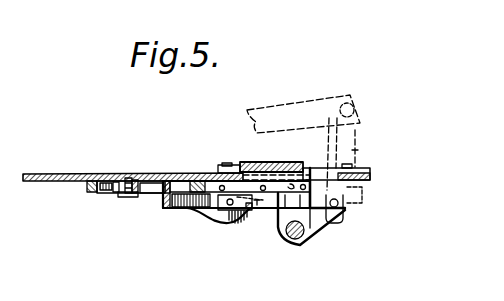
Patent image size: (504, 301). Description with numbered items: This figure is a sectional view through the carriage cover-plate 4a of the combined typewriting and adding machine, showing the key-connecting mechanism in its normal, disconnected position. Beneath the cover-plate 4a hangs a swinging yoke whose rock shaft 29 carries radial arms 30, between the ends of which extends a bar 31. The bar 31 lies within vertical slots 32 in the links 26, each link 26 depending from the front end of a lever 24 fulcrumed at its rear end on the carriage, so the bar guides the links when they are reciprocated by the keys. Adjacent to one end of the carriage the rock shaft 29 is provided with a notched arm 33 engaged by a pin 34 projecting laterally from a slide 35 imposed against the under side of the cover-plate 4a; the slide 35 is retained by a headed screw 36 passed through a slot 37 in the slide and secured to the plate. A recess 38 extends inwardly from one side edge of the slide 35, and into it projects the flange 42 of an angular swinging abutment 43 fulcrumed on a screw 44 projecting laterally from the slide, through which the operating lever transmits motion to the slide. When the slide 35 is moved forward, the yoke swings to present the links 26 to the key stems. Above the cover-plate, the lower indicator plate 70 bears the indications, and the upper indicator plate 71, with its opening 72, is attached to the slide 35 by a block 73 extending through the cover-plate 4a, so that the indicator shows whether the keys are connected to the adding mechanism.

The cover-plate 4a is at (72, 174).
The lever 24 is at (292, 107).
The link 26 is at (353, 144).
The rock shaft 29 is at (293, 239).
The radial arms 30 is at (321, 212).
The bar 31 is at (343, 212).
The vertical slots 32 is at (332, 225).
The notched arm 33 is at (283, 217).
The pin 34 is at (277, 215).
The slide 35 is at (88, 186).
The headed screw 36 is at (126, 194).
The slot 37 is at (118, 186).
The recess 38 is at (146, 196).
The flange 42 is at (166, 192).
The swinging abutment 43 is at (199, 203).
The screw 44 is at (217, 210).
The lower indicator plate 70 is at (235, 164).
The upper indicator plate 71 is at (291, 168).
The opening 72 is at (262, 168).
The block 73 is at (215, 186).